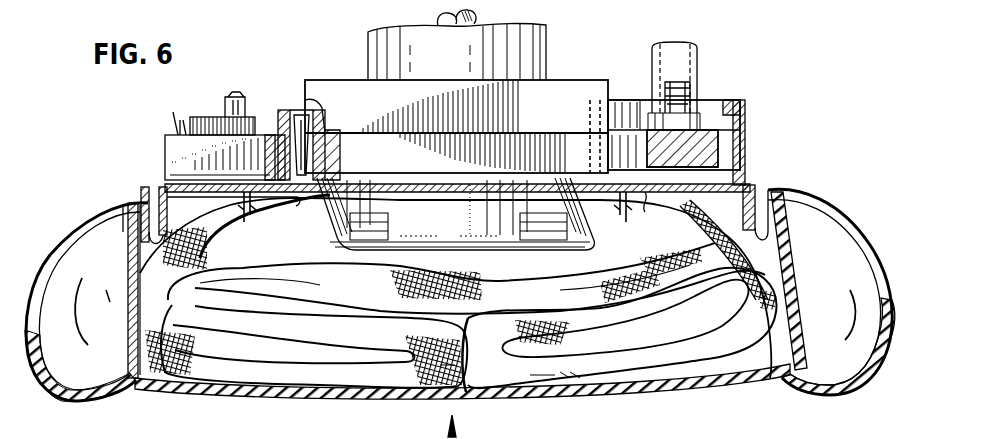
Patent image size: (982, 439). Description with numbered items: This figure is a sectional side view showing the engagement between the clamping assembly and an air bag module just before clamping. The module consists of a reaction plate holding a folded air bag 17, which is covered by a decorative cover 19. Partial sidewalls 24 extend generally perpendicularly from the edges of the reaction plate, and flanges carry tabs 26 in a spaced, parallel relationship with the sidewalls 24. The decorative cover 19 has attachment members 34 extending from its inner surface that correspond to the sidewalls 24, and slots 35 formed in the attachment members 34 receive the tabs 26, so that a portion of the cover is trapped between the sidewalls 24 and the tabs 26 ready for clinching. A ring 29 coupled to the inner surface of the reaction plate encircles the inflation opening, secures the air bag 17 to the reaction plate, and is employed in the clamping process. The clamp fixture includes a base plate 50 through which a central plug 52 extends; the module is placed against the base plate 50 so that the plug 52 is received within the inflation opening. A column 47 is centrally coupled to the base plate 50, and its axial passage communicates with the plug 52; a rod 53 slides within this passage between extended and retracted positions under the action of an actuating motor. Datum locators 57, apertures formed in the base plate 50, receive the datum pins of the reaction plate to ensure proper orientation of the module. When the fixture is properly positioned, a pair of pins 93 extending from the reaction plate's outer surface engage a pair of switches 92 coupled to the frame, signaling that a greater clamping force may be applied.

The folded air bag 17 is at (247, 270).
The decorative cover 19 is at (143, 383).
The partial sidewalls 24 is at (457, 197).
The tabs 26 is at (166, 188).
The ring 29 is at (247, 213).
The attachment members 34 is at (110, 215).
The slots 35 is at (133, 232).
The column 47 is at (385, 62).
The base plate 50 is at (566, 158).
The central plug 52 is at (318, 216).
The rod 53 is at (440, 24).
The datum locators 57 is at (287, 110).
The switches 92 is at (698, 62).
The pins 93 is at (692, 95).